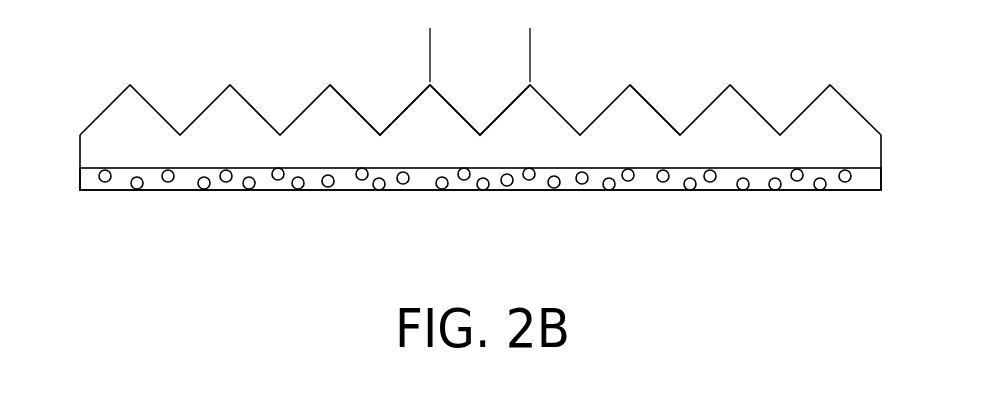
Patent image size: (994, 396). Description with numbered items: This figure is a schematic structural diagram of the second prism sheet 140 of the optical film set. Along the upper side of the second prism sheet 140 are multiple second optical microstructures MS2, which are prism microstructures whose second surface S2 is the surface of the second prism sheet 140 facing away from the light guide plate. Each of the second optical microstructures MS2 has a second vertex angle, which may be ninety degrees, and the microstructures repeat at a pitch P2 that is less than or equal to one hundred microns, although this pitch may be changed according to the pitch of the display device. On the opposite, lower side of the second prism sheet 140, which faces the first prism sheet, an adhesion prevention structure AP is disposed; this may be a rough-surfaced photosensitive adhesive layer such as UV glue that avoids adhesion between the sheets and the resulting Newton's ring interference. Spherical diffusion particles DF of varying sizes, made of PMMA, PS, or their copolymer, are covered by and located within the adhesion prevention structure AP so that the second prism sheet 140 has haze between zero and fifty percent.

The second prism sheet 140 is at (905, 280).
The second optical microstructures MS2 is at (400, 78).
The second surface S2 is at (652, 93).
The pitch P2 is at (530, 45).
The adhesion prevention structure AP is at (86, 177).
The diffusion particle DF is at (851, 176).